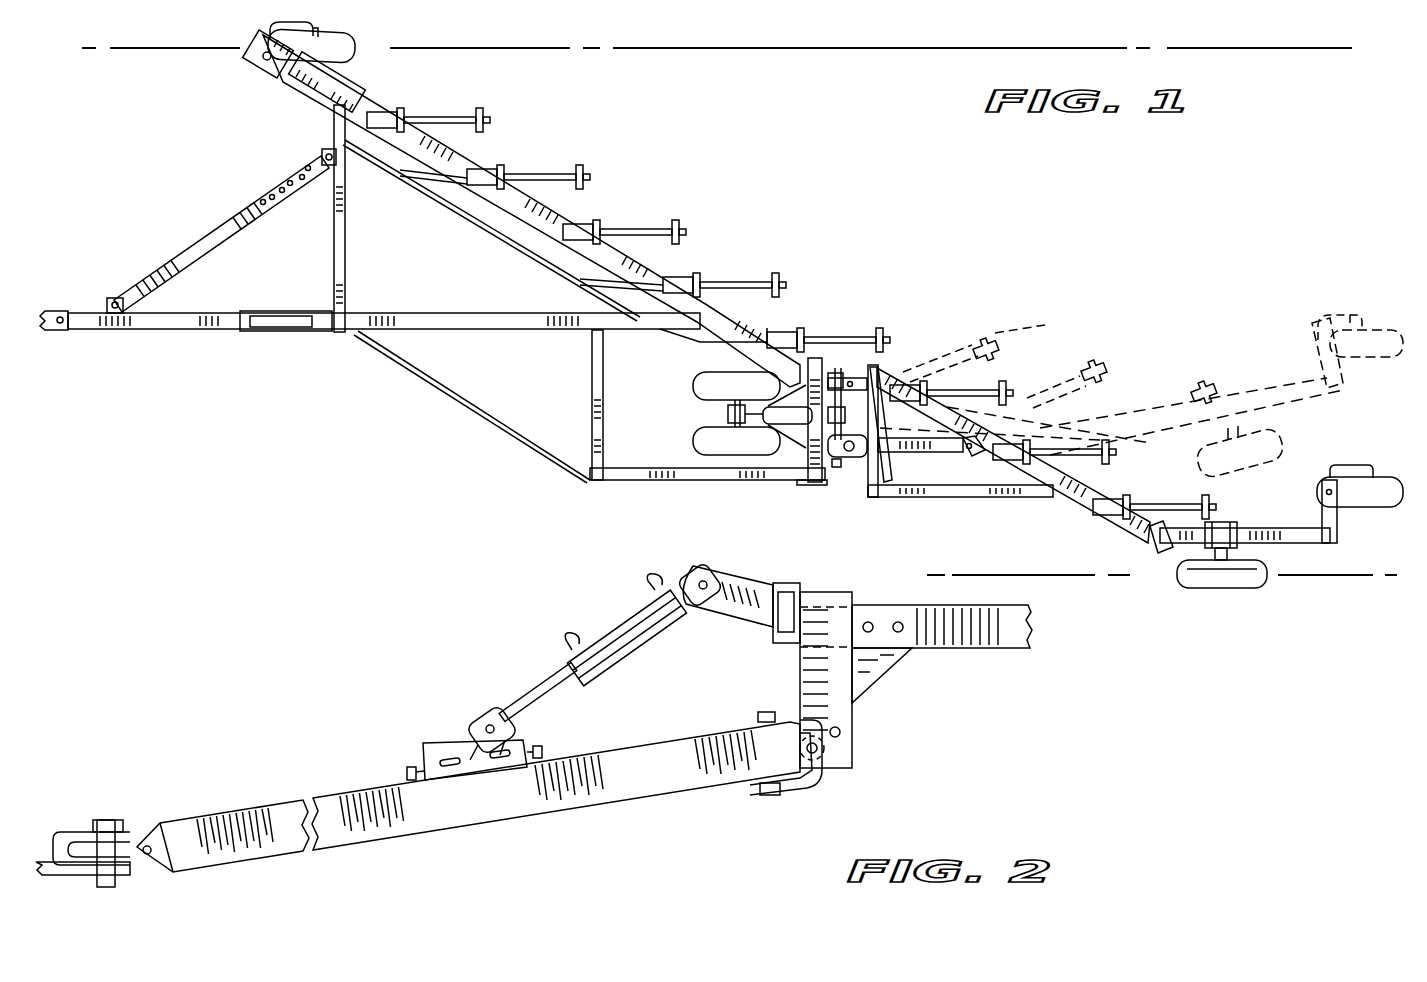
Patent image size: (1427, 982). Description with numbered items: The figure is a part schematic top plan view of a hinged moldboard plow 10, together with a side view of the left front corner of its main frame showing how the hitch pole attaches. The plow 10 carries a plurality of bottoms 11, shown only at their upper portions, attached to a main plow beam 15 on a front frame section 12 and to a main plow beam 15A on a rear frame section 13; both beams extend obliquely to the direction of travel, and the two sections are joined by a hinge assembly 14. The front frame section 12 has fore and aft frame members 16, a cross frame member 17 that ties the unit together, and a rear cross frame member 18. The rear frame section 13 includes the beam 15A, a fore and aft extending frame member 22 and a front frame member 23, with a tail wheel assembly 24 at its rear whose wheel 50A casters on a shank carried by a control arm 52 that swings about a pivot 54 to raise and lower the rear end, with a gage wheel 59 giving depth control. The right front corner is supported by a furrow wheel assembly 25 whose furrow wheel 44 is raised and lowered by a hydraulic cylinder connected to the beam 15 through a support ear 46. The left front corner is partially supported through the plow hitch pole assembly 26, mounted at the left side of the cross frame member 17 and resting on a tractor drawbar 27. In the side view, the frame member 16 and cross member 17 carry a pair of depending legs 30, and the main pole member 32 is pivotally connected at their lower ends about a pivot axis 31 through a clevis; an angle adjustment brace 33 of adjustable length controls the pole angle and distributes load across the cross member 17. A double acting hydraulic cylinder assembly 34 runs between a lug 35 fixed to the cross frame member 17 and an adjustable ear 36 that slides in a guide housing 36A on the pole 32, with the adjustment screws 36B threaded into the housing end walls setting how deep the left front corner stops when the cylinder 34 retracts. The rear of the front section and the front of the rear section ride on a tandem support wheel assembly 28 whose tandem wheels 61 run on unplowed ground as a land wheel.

In FIG. 1, the plow 10 is at (703, 230).
In FIG. 1, the moldboards or bottoms 11 is at (443, 113).
In FIG. 1, the front frame section 12 is at (385, 328).
In FIG. 1, the rear frame section 13 is at (1010, 495).
In FIG. 1, the hinge assembly 14 is at (835, 365).
In FIG. 1, the main plow beam 15 is at (530, 213).
In FIG. 1, the main plow beam 15A is at (1077, 500).
In FIG. 1, the frame members 16 is at (641, 483).
In FIG. 2, the frame members 16 is at (1005, 647).
In FIG. 1, the cross frame member 17 is at (337, 259).
In FIG. 2, the cross frame member 17 is at (787, 645).
In FIG. 1, the rear cross frame member 18 is at (810, 450).
In FIG. 1, the fore and aft extending frame member 22 is at (935, 452).
In FIG. 1, the front frame member 23 is at (865, 470).
In FIG. 1, the tail wheel assembly 24 is at (1303, 545).
In FIG. 1, the furrow wheel assembly 25 is at (253, 68).
In FIG. 1, the plow hitch pole assembly 26 is at (226, 331).
In FIG. 1, the tractor drawbar 27 is at (50, 334).
In FIG. 2, the tractor drawbar 27 is at (75, 835).
In FIG. 1, the tandem support wheel assembly 28 is at (684, 430).
In FIG. 2, the depending legs 30 is at (848, 745).
In FIG. 2, the pivot axis 31 is at (820, 758).
In FIG. 1, the main pole member 32 is at (160, 332).
In FIG. 2, the main pole member 32 is at (353, 833).
In FIG. 1, the angle adjustment brace 33 is at (212, 230).
In FIG. 1, the double acting hydraulic cylinder assembly 34 is at (287, 331).
In FIG. 2, the double acting hydraulic cylinder assembly 34 is at (612, 625).
In FIG. 2, the lug 35 is at (742, 617).
In FIG. 2, the adjustable ear 36 is at (478, 718).
In FIG. 2, the guide housing 36A is at (475, 755).
In FIG. 2, the clamp bolts 36B is at (405, 770).
In FIG. 1, the furrow wheel 44 is at (357, 46).
In FIG. 1, the support ear 46 is at (520, 331).
In FIG. 1, the wheel 50A is at (1385, 508).
In FIG. 1, the control arm 52 is at (1271, 397).
In FIG. 1, the pivot 54 is at (1222, 520).
In FIG. 1, the gage wheel 59 is at (1205, 589).
In FIG. 1, the tandem wheels 61 is at (693, 380).